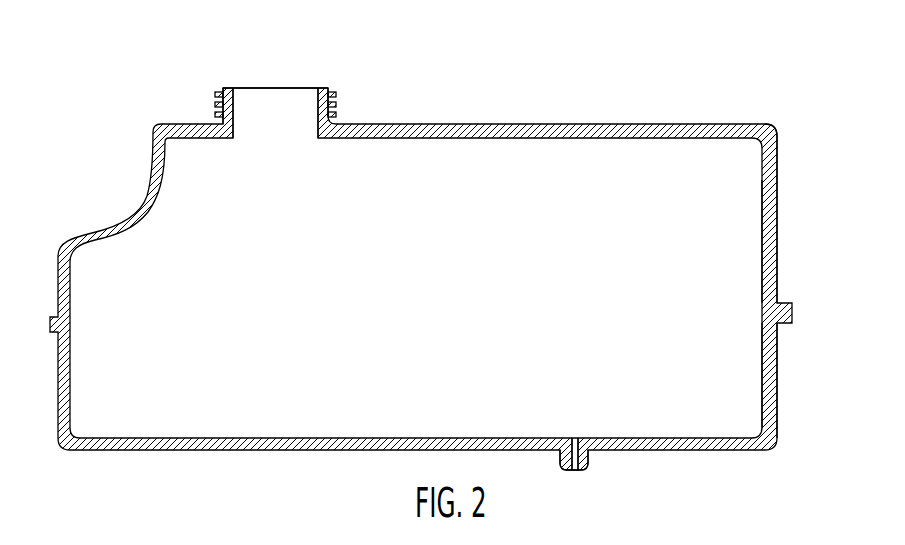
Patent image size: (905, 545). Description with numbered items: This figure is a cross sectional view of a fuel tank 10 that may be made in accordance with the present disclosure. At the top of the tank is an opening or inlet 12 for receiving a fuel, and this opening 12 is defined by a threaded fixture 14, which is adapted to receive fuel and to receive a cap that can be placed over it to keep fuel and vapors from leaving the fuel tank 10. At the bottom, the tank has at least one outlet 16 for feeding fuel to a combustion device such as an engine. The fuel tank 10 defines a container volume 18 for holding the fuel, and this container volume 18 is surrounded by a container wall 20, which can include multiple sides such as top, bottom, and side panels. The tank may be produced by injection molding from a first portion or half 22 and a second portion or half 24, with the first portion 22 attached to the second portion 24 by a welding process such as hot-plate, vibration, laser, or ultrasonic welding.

The fuel tank 10 is at (698, 101).
The opening or inlet 12 is at (274, 83).
The threaded fixture 14 is at (336, 99).
The outlet 16 is at (588, 455).
The container volume 18 is at (452, 321).
The container wall 20 is at (775, 215).
The first portion or half 22 is at (772, 160).
The second portion or half 24 is at (777, 380).